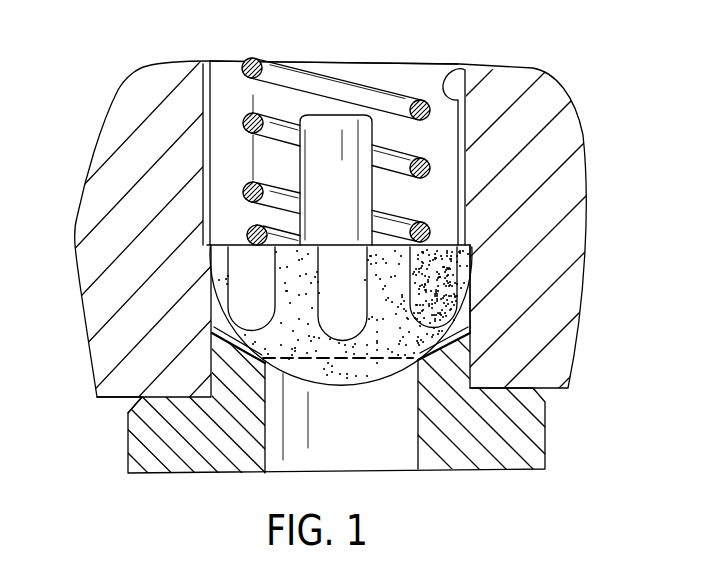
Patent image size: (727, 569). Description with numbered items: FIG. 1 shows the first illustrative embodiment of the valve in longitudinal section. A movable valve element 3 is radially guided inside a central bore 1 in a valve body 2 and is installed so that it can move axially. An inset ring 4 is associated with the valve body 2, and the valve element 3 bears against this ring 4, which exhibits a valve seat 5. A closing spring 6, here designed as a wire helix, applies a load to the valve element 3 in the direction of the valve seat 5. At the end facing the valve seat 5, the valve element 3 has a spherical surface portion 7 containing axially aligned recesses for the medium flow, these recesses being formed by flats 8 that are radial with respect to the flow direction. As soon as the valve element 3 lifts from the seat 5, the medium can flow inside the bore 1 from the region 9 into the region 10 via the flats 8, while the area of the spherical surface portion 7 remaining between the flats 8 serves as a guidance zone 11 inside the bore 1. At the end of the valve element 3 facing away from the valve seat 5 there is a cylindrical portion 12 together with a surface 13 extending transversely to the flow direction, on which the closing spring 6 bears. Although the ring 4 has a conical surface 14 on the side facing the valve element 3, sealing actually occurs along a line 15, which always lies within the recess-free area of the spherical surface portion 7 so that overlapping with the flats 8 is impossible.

The central bore 1 is at (453, 63).
The valve body 2 is at (520, 293).
The movable valve element 3 is at (480, 237).
The inset ring 4 is at (493, 428).
The valve seat 5 is at (283, 378).
The closing spring 6 is at (258, 59).
The spherical surface portion 7 is at (297, 298).
The flats 8 is at (243, 272).
The region 9 is at (460, 316).
The region 10 is at (217, 142).
The guidance zone 11 is at (205, 247).
The cylindrical portion 12 is at (347, 160).
The surface 13 is at (412, 216).
The conical surface 14 is at (140, 397).
The line 15 is at (377, 363).